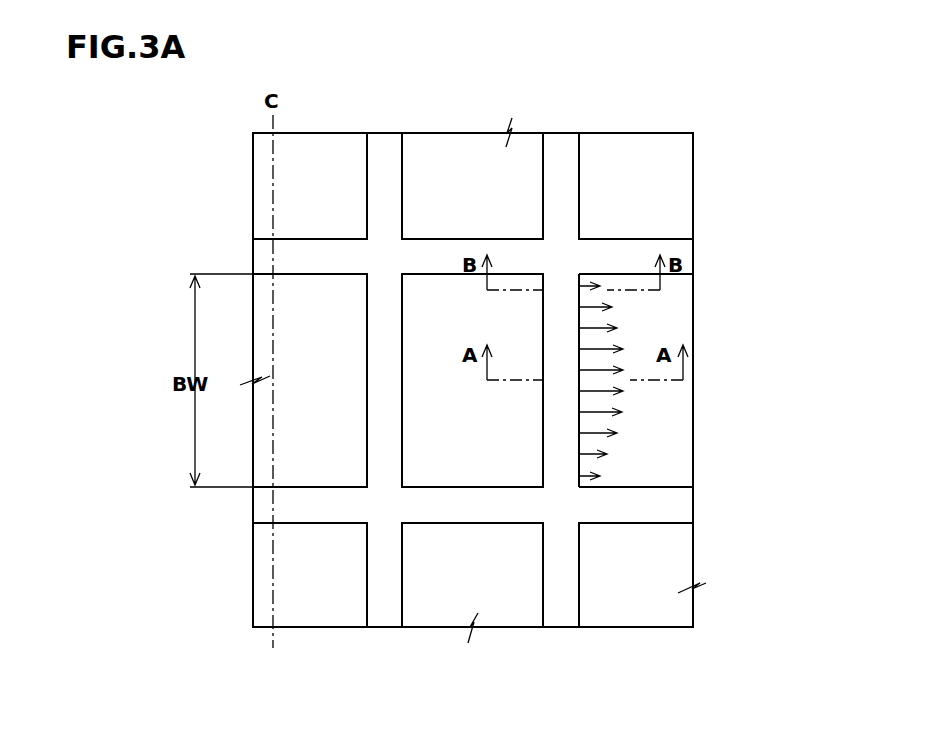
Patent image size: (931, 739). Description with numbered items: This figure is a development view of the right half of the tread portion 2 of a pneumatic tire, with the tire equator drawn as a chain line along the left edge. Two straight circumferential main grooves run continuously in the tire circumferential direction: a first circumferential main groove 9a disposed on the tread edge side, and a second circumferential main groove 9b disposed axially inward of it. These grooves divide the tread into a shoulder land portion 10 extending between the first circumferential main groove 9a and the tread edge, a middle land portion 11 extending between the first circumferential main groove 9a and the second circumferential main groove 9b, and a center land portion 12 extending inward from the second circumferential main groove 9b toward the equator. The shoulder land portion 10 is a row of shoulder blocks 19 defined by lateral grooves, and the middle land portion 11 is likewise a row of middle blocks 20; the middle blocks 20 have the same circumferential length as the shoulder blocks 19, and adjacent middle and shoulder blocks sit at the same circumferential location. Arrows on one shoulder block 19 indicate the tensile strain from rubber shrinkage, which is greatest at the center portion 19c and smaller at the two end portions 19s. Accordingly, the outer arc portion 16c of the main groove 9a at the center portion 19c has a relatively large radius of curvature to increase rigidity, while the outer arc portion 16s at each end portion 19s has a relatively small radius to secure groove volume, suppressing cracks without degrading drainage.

The tread portion 2 is at (703, 127).
The first circumferential main groove 9a is at (560, 168).
The second circumferential main groove 9b is at (388, 165).
The shoulder land portion 10 is at (615, 128).
The middle land portion 11 is at (490, 128).
The center land portion 12 is at (307, 128).
The outer arc portion at center portion 16c is at (565, 385).
The outer arc portion at end portions 16s is at (562, 264).
The shoulder block 19 is at (672, 158).
The center portion 19c is at (632, 392).
The end portion 19s is at (668, 277).
The middle block 20 is at (440, 158).